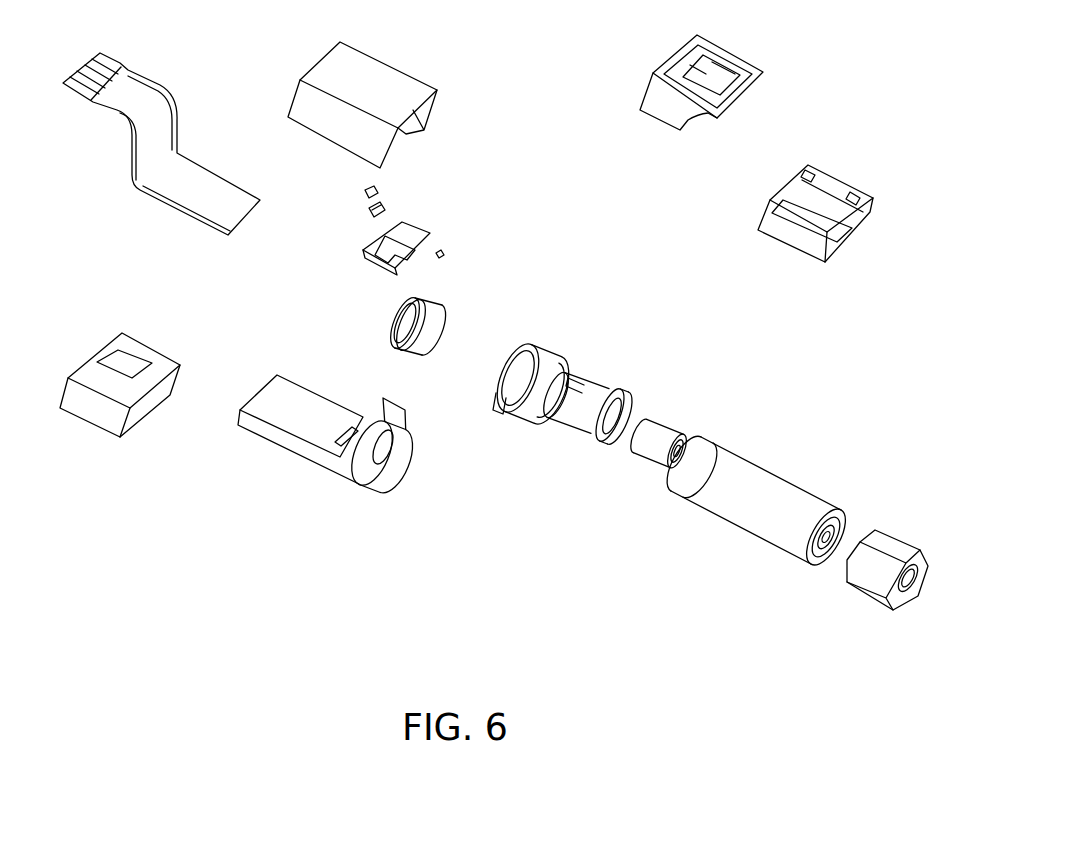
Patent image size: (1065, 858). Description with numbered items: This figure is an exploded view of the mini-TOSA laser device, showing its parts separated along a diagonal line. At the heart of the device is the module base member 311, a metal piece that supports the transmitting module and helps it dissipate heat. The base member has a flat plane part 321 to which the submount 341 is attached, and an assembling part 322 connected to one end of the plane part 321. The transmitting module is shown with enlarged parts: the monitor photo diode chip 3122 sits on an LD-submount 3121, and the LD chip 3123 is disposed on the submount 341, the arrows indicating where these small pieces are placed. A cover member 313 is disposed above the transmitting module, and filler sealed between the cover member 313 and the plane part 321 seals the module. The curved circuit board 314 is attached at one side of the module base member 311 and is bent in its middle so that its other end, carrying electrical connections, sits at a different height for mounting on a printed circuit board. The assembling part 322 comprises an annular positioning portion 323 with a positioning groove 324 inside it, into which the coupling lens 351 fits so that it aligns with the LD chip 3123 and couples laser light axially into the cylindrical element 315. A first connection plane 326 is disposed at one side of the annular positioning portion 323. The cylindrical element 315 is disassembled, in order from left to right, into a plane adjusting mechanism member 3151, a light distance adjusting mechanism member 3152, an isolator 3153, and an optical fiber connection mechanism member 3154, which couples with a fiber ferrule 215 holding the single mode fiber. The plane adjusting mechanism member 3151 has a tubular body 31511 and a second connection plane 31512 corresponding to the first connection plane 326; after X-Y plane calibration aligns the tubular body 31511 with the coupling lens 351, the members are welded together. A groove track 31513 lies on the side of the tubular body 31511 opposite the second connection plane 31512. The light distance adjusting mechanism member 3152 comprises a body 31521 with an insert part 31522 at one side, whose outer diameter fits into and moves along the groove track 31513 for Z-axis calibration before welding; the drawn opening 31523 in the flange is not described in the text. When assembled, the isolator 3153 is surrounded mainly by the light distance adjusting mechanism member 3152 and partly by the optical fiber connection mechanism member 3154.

The fiber ferrule 215 is at (867, 573).
The module base member 311 is at (315, 481).
The cover member 313 is at (375, 82).
The curved circuit board 314 is at (92, 107).
The cylindrical element 315 is at (671, 456).
The plane part 321 is at (275, 438).
The assembling part 322 is at (412, 493).
The annular positioning portion 323 is at (357, 455).
The positioning groove 324 is at (385, 443).
The first connection plane 326 is at (400, 422).
The submount 341 is at (373, 255).
The coupling lens 351 is at (442, 307).
The LD-submount 3121 is at (357, 222).
The monitor photo diode chip 3122 is at (385, 188).
The LD chip 3123 is at (452, 250).
The plane adjusting mechanism member 3151 is at (549, 381).
The light distance adjusting mechanism member 3152 is at (657, 419).
The isolator 3153 is at (642, 455).
The optical fiber connection mechanism member 3154 is at (760, 518).
The tubular body 31511 is at (535, 368).
The second connection plane 31512 is at (517, 350).
The groove track 31513 is at (562, 363).
The body 31521 is at (622, 393).
The insert part 31522 is at (573, 393).
The flange opening 31523 is at (623, 413).